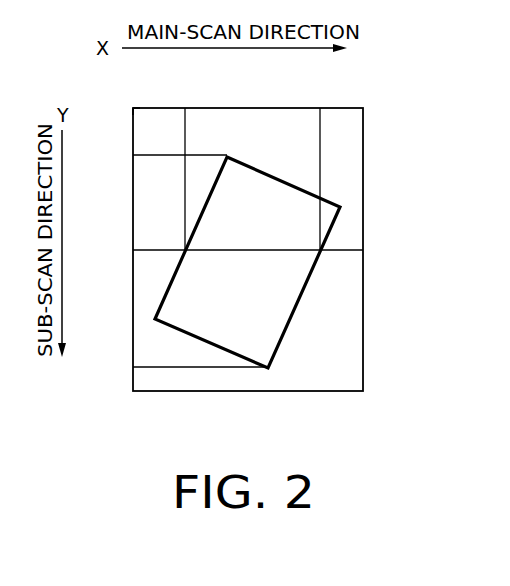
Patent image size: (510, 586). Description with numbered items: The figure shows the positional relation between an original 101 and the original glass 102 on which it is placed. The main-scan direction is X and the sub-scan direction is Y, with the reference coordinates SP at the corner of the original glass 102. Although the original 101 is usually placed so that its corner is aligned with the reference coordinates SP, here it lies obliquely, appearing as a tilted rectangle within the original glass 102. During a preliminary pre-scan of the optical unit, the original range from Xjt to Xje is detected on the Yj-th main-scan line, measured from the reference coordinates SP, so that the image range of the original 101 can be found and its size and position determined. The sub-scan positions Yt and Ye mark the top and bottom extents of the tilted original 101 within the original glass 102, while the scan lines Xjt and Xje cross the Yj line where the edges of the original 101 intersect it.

The original 101 is at (224, 337).
The original glass 102 is at (350, 133).
The reference coordinates SP is at (111, 94).
The original range start position Xjt is at (191, 163).
The original range end position Xje is at (327, 163).
The sub-scan position of document top corner Yt is at (163, 161).
The Yj-th main-scan line Yj is at (231, 251).
The sub-scan position of document bottom corner Ye is at (182, 369).